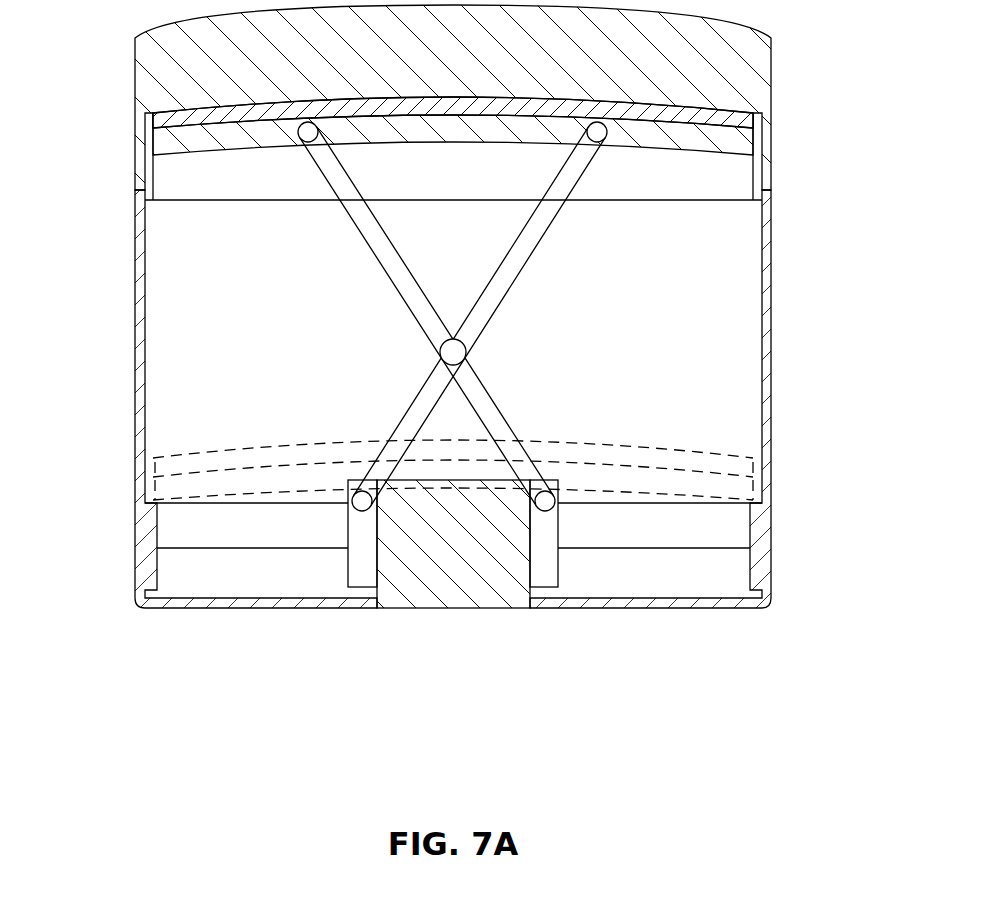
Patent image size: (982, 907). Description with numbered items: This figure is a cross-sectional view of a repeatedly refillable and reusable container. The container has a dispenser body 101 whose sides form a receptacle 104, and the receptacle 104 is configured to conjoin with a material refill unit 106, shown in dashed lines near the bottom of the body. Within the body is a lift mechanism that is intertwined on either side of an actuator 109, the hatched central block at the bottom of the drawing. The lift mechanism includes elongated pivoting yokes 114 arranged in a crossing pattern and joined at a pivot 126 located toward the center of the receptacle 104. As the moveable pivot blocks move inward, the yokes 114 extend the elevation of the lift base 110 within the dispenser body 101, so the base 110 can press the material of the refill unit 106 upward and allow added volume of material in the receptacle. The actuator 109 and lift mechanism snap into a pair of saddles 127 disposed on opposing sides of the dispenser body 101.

The dispenser body 101 is at (135, 358).
The receptacle 104 is at (212, 333).
The material refill unit 106 is at (270, 443).
The actuator 109 is at (440, 610).
The lift base 110 is at (740, 225).
The elongated pivoting yokes 114 is at (518, 273).
The pivot 126 is at (466, 346).
The saddles 127 is at (135, 545).